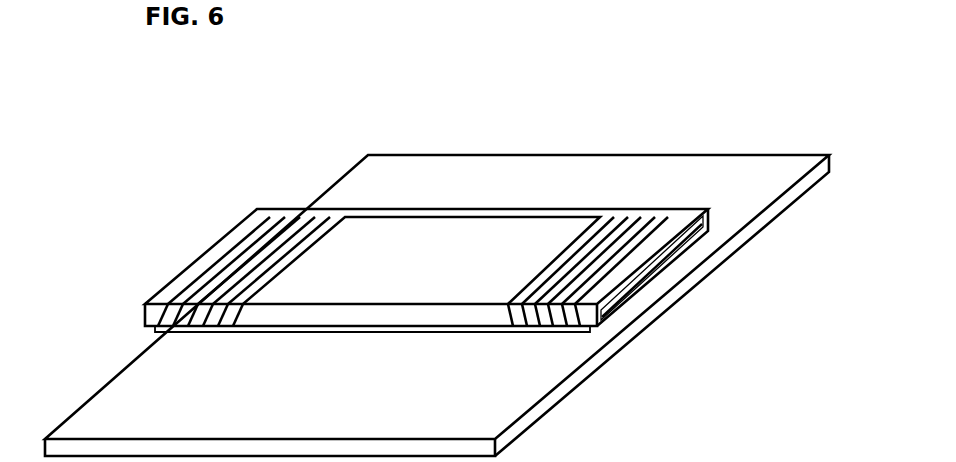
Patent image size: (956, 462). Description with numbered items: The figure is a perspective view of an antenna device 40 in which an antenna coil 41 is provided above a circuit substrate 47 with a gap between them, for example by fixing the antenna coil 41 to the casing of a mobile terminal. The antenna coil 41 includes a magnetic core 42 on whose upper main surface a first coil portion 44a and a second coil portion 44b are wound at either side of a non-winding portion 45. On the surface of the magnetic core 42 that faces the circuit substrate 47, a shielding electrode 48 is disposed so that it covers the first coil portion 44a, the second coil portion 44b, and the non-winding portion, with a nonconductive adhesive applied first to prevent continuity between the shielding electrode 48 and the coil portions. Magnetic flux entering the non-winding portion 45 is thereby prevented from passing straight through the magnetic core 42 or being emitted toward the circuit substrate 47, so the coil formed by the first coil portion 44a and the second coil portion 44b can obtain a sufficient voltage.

The antenna device 40 is at (130, 24).
The antenna coil 41 is at (283, 208).
The magnetic core 42 is at (673, 248).
The first coil portion 44a is at (235, 340).
The second coil portion 44b is at (579, 335).
The non-winding portion 45 is at (435, 275).
The circuit substrate 47 is at (703, 182).
The shielding electrode 48 is at (190, 340).